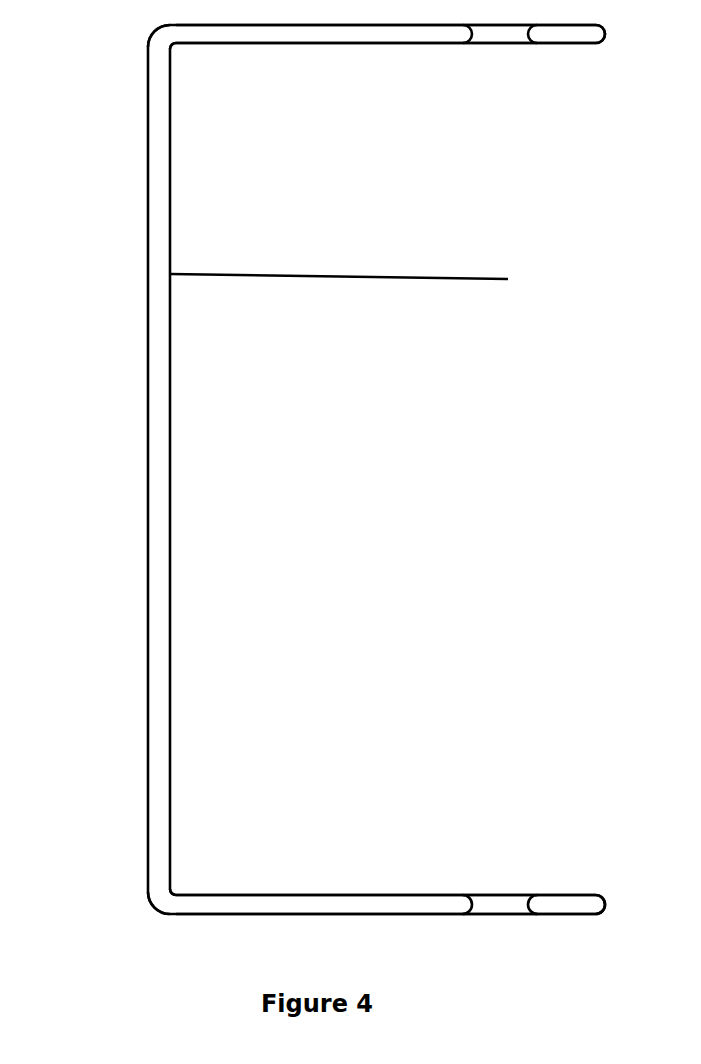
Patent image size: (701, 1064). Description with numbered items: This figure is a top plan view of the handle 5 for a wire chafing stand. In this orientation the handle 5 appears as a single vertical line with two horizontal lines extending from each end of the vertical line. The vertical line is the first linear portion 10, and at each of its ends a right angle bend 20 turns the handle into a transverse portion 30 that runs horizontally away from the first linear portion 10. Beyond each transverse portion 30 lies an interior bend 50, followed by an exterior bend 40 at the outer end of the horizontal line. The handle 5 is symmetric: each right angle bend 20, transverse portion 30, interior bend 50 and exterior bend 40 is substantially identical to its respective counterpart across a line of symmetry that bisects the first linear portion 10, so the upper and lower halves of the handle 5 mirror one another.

The handle 5 is at (353, 284).
The first linear portion 10 is at (152, 368).
The right angle bend 20 is at (157, 38).
The transverse portion 30 is at (347, 35).
The exterior bend 40 is at (569, 43).
The interior bend 50 is at (504, 43).